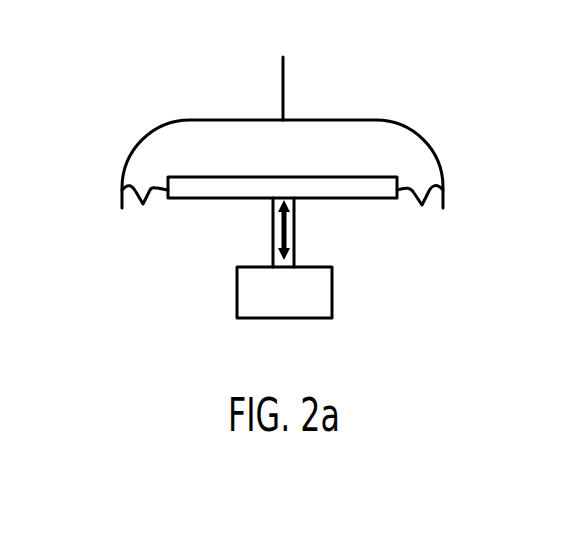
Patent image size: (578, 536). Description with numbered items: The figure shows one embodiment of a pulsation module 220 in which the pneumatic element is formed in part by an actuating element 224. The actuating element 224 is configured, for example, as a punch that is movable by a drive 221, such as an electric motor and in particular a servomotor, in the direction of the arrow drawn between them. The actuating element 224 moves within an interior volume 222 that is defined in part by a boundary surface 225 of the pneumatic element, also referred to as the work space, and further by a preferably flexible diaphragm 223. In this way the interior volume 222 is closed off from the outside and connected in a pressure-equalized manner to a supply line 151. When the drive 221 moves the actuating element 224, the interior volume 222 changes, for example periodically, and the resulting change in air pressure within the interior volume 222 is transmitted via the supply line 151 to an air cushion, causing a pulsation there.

The supply line 151 is at (284, 76).
The pulsation module 220 is at (180, 285).
The drive 221 is at (332, 292).
The interior volume 222 is at (376, 131).
The flexible diaphragm 223 is at (422, 205).
The actuating element 224 is at (217, 199).
The boundary surface 225 is at (420, 135).